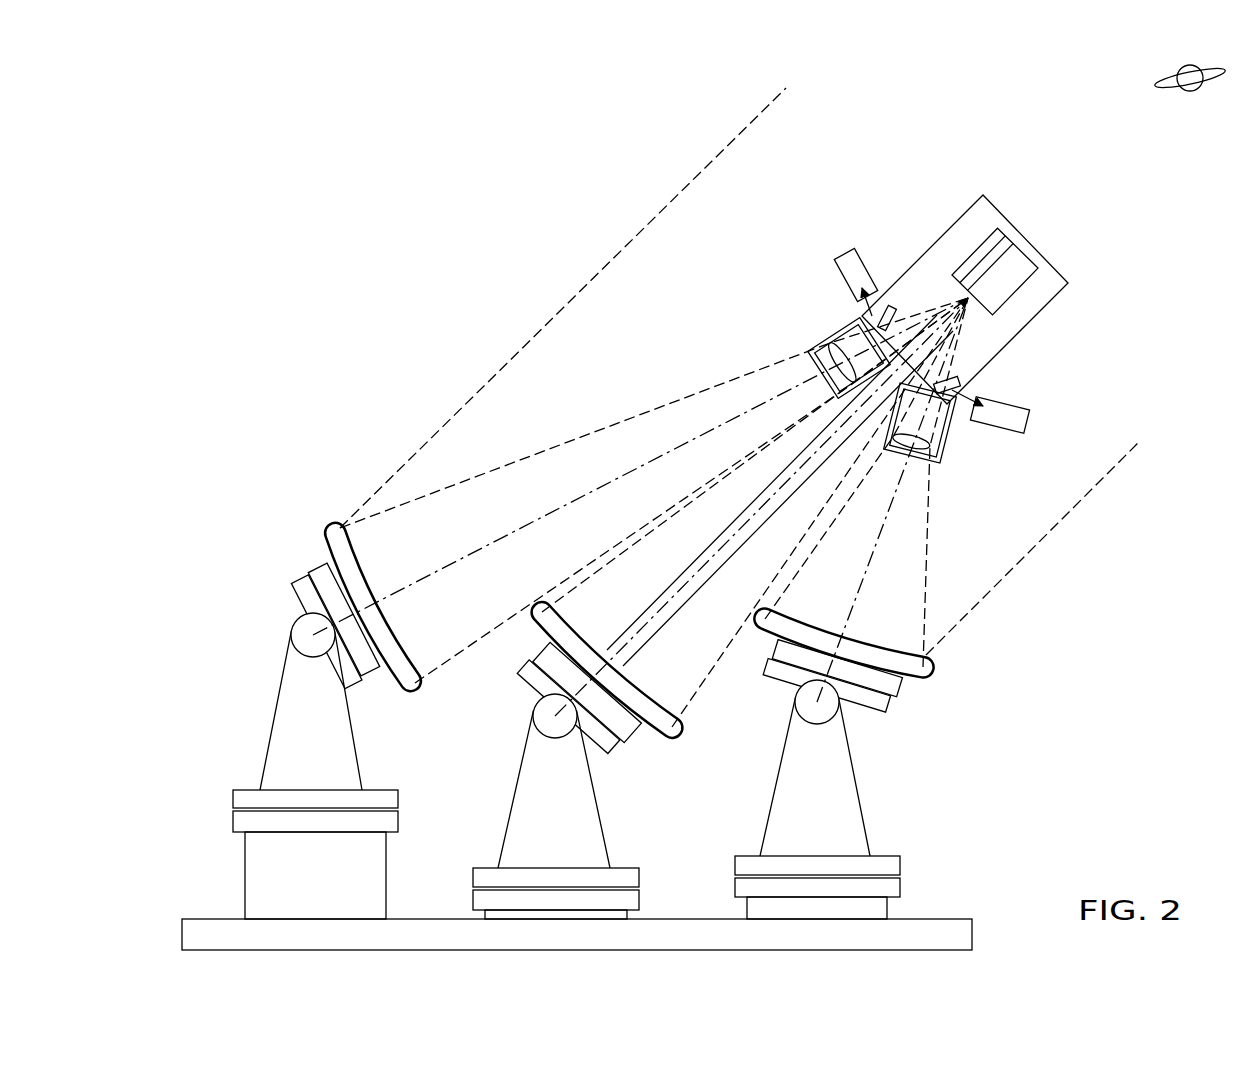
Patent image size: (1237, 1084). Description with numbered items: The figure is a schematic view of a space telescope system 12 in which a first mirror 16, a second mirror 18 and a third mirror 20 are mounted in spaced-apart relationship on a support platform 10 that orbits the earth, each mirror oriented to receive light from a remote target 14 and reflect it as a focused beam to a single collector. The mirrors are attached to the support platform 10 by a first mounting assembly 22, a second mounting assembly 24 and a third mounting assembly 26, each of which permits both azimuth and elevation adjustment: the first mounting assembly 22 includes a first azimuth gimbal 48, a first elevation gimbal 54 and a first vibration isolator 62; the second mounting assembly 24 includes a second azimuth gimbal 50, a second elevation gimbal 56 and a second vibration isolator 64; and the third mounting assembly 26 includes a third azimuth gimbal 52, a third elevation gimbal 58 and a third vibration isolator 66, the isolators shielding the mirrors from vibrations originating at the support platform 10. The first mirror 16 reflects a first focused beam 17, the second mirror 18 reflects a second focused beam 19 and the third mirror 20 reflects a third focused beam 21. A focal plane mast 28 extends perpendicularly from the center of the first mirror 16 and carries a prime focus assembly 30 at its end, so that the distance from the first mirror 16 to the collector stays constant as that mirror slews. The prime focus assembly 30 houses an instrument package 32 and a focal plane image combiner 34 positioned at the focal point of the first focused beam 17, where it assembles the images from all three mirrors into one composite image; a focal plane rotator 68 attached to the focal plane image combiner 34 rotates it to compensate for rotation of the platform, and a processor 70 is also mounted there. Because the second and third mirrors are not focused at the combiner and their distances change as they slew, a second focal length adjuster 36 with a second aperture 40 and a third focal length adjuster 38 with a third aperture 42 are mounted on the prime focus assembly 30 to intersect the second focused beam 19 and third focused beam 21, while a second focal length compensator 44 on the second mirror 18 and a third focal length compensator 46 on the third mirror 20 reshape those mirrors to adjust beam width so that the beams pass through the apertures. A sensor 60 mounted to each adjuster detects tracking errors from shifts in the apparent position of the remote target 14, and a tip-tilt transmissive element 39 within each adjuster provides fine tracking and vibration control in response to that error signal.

The support platform 10 is at (975, 930).
The space telescope system 12 is at (298, 631).
The remote target 14 is at (1192, 95).
The first mirror 16 is at (685, 722).
The first focused beam 17 is at (702, 678).
The second mirror 18 is at (938, 664).
The second focused beam 19 is at (924, 592).
The third mirror 20 is at (334, 524).
The third focused beam 21 is at (490, 629).
The first mounting assembly 22 is at (528, 754).
The second mounting assembly 24 is at (808, 747).
The third mounting assembly 26 is at (267, 710).
The focal plane mast 28 is at (683, 566).
The prime focus assembly 30 is at (986, 286).
The instrument package 32 is at (1016, 289).
The focal plane image combiner 34 is at (1001, 269).
The second focal length adjuster 36 is at (935, 456).
The third focal length adjuster 38 is at (820, 342).
The tip-tilt transmissive element 39 is at (878, 322).
The second aperture 40 is at (936, 470).
The third aperture 42 is at (819, 338).
The second focal length compensator 44 is at (906, 700).
The third focal length compensator 46 is at (382, 686).
The first azimuth gimbal 48 is at (643, 896).
The second azimuth gimbal 50 is at (905, 884).
The third azimuth gimbal 52 is at (345, 835).
The first elevation gimbal 54 is at (553, 738).
The second elevation gimbal 56 is at (814, 727).
The third elevation gimbal 58 is at (316, 660).
The sensor 60 is at (848, 252).
The first vibration isolator 62 is at (560, 889).
The second vibration isolator 64 is at (822, 876).
The third vibration isolator 66 is at (310, 812).
The focal plane rotator 68 is at (962, 265).
The processor 70 is at (990, 220).